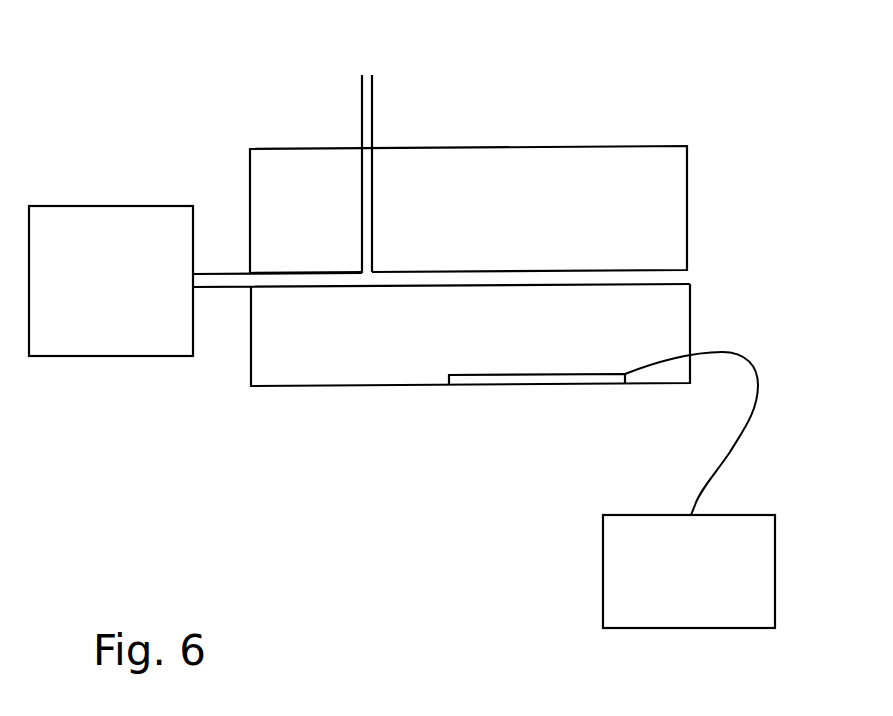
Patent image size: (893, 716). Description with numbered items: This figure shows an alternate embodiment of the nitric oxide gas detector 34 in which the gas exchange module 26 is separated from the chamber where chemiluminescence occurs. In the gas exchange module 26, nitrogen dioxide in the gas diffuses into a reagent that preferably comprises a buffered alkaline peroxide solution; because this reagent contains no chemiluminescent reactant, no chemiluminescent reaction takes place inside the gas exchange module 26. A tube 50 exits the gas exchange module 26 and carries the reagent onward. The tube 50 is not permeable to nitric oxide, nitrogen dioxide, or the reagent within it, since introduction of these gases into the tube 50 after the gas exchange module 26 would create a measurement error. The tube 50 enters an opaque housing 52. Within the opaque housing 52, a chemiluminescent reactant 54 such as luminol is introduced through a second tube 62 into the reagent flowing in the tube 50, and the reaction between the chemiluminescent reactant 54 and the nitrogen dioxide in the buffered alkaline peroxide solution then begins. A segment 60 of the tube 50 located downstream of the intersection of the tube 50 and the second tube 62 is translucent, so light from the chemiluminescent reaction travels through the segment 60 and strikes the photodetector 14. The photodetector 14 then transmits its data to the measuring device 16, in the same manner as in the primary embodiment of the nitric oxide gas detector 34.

The photodetector 14 is at (510, 387).
The measuring device 16 is at (703, 580).
The gas exchange module 26 is at (92, 228).
The nitric oxide gas detector 34 is at (343, 511).
The tube 50 is at (213, 281).
The opaque housing 52 is at (535, 147).
The chemiluminescent reactant 54 is at (366, 72).
The segment 60 is at (530, 278).
The second tube 62 is at (376, 187).